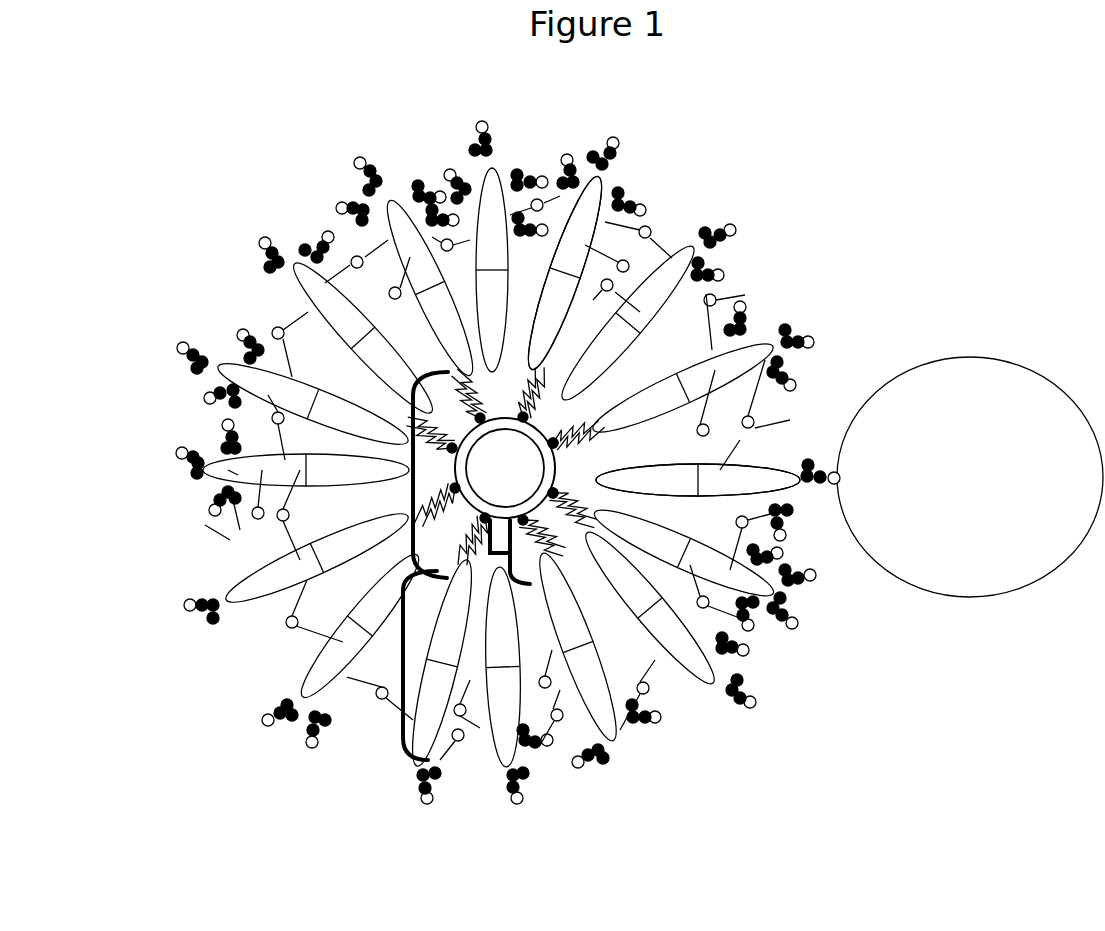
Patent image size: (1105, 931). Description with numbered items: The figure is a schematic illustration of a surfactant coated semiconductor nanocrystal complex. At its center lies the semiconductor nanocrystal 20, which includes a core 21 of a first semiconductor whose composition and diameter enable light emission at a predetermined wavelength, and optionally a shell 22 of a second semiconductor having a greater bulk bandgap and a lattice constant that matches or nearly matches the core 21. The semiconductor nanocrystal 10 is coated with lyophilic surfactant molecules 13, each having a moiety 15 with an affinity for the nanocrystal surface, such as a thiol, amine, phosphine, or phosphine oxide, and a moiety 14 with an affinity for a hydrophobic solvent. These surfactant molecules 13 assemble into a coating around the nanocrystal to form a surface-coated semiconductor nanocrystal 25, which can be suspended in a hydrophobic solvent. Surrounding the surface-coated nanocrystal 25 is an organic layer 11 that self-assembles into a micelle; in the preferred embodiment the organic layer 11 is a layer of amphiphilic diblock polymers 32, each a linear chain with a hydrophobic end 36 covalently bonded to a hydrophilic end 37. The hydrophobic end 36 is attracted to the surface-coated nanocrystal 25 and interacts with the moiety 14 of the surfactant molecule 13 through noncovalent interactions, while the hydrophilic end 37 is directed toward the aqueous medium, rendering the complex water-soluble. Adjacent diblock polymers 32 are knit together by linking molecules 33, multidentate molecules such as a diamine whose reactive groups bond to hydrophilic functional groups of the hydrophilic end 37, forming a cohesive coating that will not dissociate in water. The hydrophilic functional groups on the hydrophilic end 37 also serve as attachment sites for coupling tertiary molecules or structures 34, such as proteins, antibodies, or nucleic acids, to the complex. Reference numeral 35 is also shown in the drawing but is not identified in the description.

The semiconductor nanocrystal 10 is at (548, 433).
The organic layer 11 is at (570, 253).
The surfactant molecules 13 is at (491, 553).
The moiety with affinity for a hydrophobic solvent 14 is at (565, 527).
The moiety with affinity for the nanocrystal surface 15 is at (553, 493).
The semiconductor nanocrystal 20 is at (703, 122).
The core 21 is at (491, 478).
The shell 22 is at (547, 468).
The surface-coated semiconductor nanocrystal 25 is at (413, 506).
The amphiphilic diblock polymer 32 is at (403, 678).
The linking molecule 33 is at (708, 617).
The tertiary molecule or structure 34 is at (970, 477).
The terminal functional group 35 is at (752, 230).
The hydrophobic end 36 is at (430, 325).
The hydrophilic end 37 is at (396, 220).